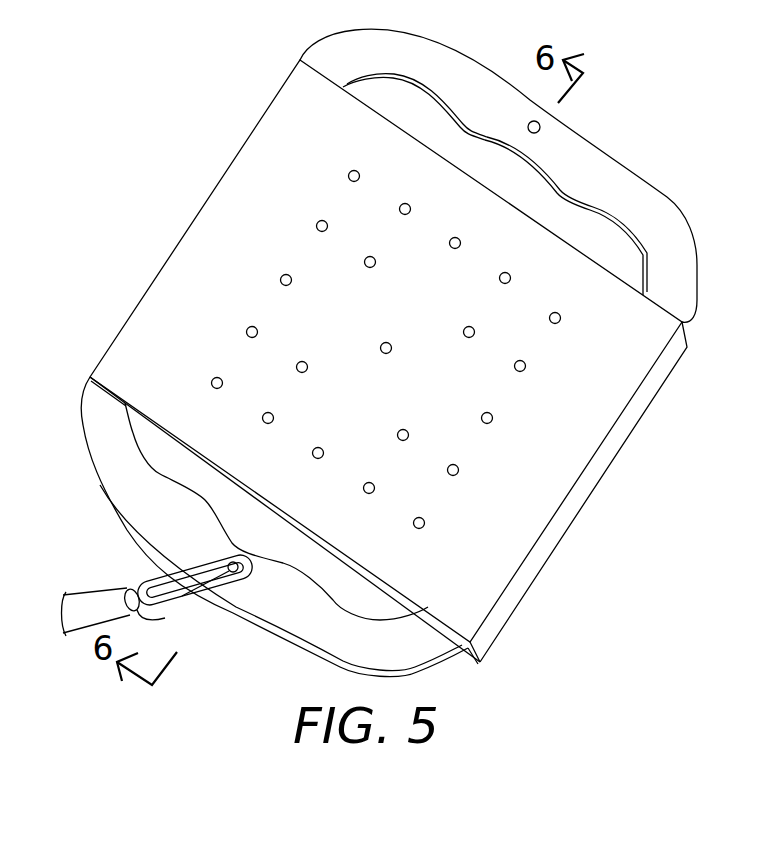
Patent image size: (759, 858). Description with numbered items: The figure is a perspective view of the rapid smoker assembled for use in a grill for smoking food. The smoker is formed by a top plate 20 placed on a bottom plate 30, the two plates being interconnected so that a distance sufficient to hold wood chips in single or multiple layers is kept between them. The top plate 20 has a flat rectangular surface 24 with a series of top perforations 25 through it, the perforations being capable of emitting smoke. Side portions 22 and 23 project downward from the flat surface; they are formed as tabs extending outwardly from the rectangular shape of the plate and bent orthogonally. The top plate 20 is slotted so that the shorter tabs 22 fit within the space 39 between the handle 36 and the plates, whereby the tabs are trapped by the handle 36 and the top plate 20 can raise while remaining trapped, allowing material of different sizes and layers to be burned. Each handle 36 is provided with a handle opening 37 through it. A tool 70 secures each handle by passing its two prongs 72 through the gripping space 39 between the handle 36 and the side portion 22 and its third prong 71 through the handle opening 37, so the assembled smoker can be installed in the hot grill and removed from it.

The top plate 20 is at (95, 368).
The side portion 22 is at (130, 432).
The side portion 23 is at (577, 501).
The flat rectangular surface 24 is at (293, 132).
The top perforations 25 is at (351, 182).
The bottom plate 30 is at (469, 660).
The handle 36 is at (312, 50).
The handle opening 37 is at (541, 127).
The space 39 is at (590, 230).
The tool 70 is at (127, 586).
The third prong 71 is at (150, 620).
The prongs 72 is at (243, 560).